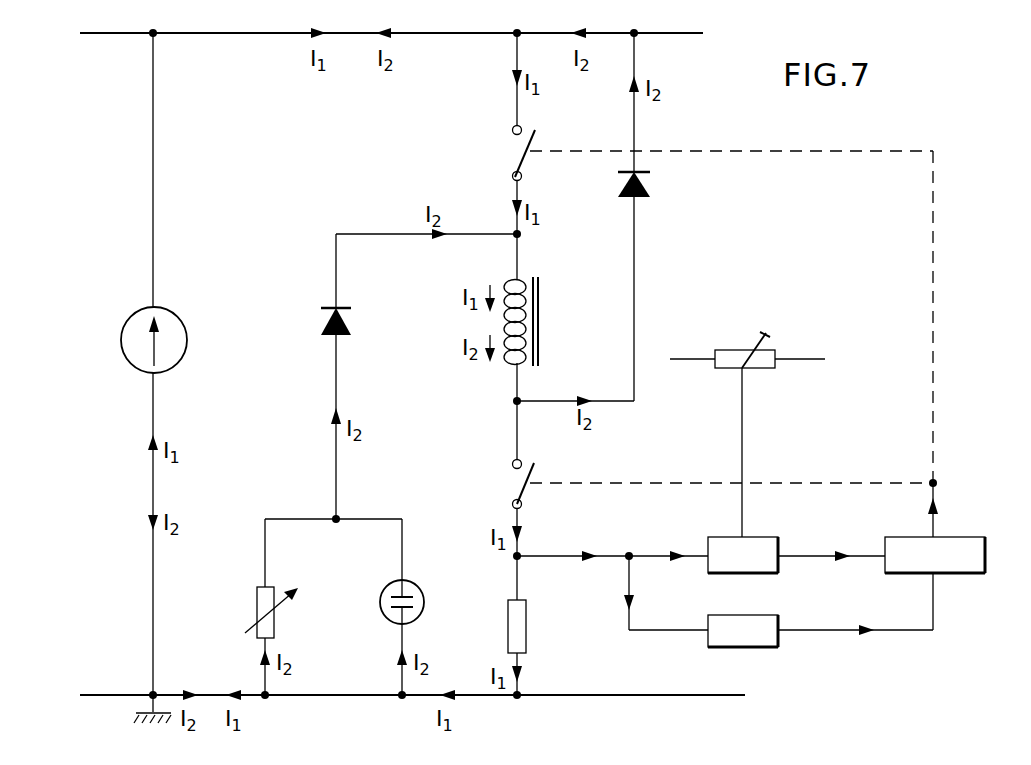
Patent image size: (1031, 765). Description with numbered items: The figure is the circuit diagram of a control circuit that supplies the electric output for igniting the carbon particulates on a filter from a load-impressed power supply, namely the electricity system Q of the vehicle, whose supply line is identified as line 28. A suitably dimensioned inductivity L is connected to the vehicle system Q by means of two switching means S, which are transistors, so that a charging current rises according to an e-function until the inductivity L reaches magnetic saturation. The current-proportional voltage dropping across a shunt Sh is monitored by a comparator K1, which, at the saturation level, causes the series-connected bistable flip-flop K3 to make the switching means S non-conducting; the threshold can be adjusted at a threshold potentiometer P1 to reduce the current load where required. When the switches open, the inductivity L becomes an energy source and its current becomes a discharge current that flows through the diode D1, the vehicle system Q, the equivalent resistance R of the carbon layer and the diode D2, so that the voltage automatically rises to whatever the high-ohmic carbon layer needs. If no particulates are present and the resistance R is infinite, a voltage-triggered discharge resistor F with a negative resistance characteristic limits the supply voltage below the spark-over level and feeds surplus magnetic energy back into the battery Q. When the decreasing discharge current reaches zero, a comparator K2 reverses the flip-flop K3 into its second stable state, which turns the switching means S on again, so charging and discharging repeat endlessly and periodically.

The conductor / supply line 28 is at (146, 232).
The electricity system of the vehicle Q is at (145, 340).
The diode D1 is at (601, 219).
The diode D2 is at (403, 374).
The inductivity L is at (531, 321).
The switching means S is at (512, 317).
The equivalent resistance of carbon layer R is at (267, 607).
The voltage-triggered discharge resistor F is at (410, 607).
The shunt Sh is at (534, 626).
The comparator K1 is at (754, 541).
The comparator K2 is at (758, 649).
The bistable flip-flop K3 is at (944, 528).
The threshold potentiometer P1 is at (747, 418).